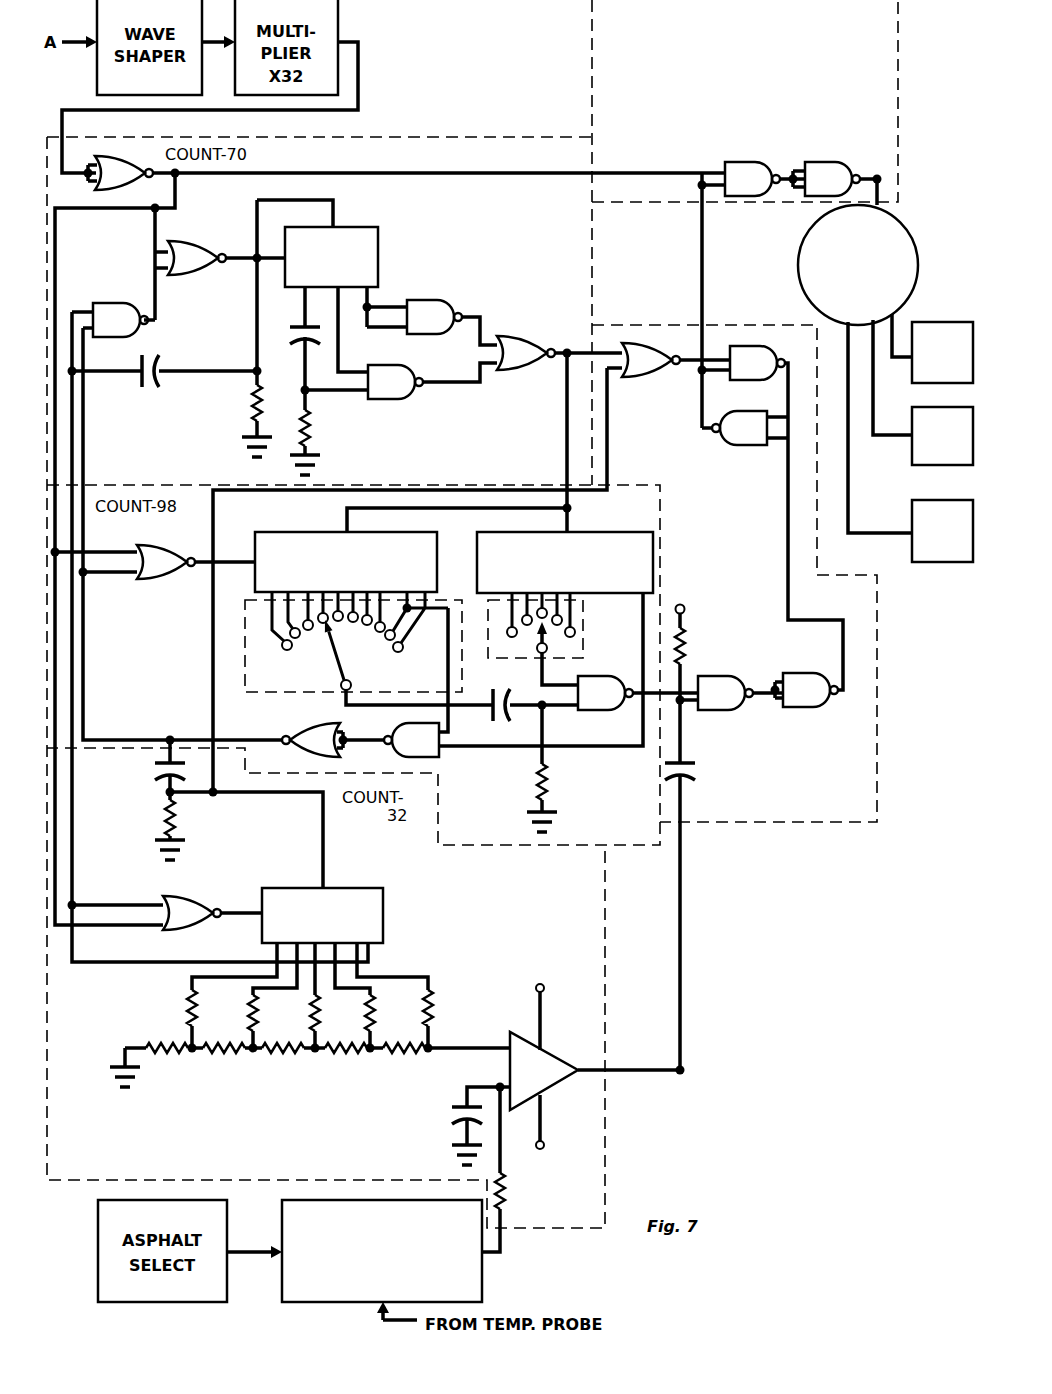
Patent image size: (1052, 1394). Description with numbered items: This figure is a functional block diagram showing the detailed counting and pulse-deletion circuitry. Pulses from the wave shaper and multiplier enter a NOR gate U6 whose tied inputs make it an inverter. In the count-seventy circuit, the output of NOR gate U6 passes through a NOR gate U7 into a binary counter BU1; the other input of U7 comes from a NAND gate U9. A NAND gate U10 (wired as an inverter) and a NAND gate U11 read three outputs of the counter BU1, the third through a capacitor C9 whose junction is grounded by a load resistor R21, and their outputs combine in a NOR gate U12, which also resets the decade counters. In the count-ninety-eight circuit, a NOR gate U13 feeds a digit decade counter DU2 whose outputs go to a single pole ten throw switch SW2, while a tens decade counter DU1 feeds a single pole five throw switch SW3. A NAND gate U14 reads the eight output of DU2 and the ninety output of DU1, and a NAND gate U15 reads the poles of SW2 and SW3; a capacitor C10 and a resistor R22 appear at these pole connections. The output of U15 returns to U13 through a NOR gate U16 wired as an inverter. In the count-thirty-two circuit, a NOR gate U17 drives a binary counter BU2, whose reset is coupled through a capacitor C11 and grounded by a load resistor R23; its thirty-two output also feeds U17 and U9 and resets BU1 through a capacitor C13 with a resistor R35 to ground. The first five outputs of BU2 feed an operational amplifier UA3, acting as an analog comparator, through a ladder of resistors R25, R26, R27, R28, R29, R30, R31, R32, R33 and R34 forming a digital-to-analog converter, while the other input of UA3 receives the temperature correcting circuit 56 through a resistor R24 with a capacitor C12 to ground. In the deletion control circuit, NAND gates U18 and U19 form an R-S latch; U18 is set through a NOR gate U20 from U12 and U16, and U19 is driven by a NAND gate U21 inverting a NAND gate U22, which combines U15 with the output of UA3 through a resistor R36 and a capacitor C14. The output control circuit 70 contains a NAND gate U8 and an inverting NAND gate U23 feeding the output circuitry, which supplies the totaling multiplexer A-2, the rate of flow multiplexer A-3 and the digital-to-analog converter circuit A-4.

The NOR gate U6 is at (124, 173).
The NOR gate U7 is at (197, 258).
The NAND gate U8 is at (752, 179).
The NAND gate U9 is at (120, 320).
The NAND gate U10 is at (434, 317).
The NAND gate U11 is at (395, 382).
The NOR gate U12 is at (526, 353).
The NOR gate U13 is at (166, 562).
The NAND gate U14 is at (411, 740).
The NAND gate U15 is at (605, 693).
The NOR gate U16 is at (311, 740).
The NOR gate U17 is at (192, 913).
The NAND gate U18 is at (757, 363).
The NAND gate U19 is at (739, 428).
The NOR gate U20 is at (651, 360).
The NAND gate U21 is at (810, 690).
The NAND gate U22 is at (725, 693).
The NAND gate U23 is at (832, 179).
The binary counter BU1 is at (331, 257).
The binary counter BU2 is at (322, 915).
The decade counter DU1 is at (565, 562).
The decade counter DU2 is at (346, 562).
The single pole ten throw switch SW2 is at (272, 692).
The single pole five throw switch SW3 is at (534, 637).
The operational amplifier UA3 is at (544, 1065).
The capacitor C9 is at (294, 349).
The capacitor C10 is at (507, 715).
The capacitor C11 is at (146, 769).
The capacitor C12 is at (444, 1136).
The capacitor C13 is at (150, 384).
The capacitor C14 is at (705, 769).
The load resistor R21 is at (323, 442).
The resistor R22 is at (561, 798).
The load resistor R23 is at (149, 830).
The resistor R24 is at (522, 1191).
The resistor R25 is at (410, 1008).
The resistor R26 is at (404, 1061).
The resistor R27 is at (346, 1061).
The resistor R28 is at (283, 1061).
The resistor R29 is at (224, 1061).
The resistor R30 is at (149, 1065).
The resistor R31 is at (352, 1013).
The resistor R32 is at (296, 1013).
The resistor R33 is at (233, 1013).
The resistor R34 is at (172, 1008).
The resistor R35 is at (242, 421).
The resistor R36 is at (708, 782).
The totaling multiplexer A-2 is at (942, 531).
The rate of flow multiplexer A-3 is at (942, 352).
The digital-to-analog converter circuit A-4 is at (942, 436).
The output control circuit 70 is at (897, 157).
The temperature correcting circuit 56 is at (482, 1265).